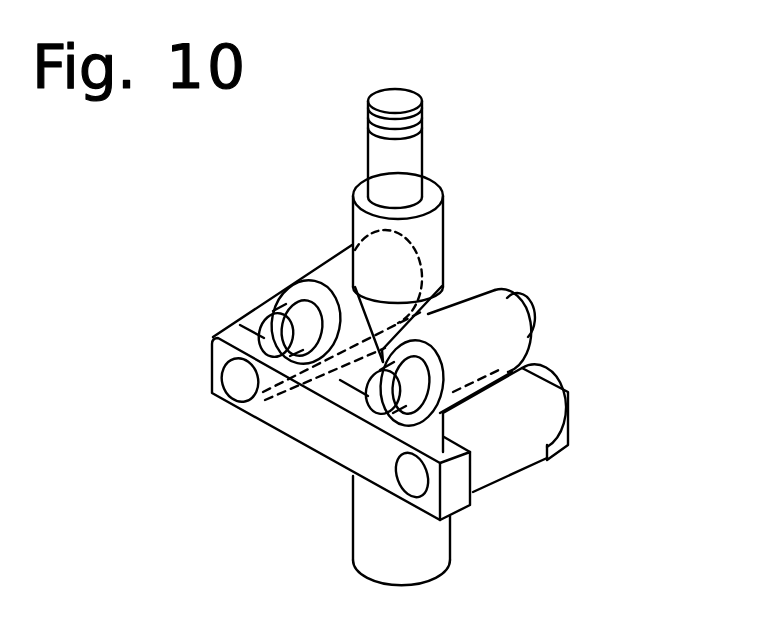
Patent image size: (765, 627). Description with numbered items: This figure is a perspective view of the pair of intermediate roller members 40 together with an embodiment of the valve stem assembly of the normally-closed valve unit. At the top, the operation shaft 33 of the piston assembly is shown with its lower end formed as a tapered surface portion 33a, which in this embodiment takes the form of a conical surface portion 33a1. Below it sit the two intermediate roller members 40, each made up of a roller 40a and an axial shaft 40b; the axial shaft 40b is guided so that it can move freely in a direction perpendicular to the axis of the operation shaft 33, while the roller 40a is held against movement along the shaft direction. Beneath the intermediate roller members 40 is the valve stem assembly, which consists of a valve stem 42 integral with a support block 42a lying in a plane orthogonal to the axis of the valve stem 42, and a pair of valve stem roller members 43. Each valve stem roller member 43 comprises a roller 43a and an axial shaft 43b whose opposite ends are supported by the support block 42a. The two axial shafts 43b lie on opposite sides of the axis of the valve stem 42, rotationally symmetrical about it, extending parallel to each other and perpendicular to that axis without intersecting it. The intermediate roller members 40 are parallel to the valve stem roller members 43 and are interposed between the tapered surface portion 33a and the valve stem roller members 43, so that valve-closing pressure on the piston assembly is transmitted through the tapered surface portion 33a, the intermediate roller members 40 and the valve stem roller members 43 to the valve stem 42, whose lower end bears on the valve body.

The operation shaft 33 is at (444, 211).
The tapered surface portion 33a is at (330, 357).
The conical surface portion 33a1 is at (382, 356).
The intermediate roller member 40 is at (428, 312).
The roller 40a is at (343, 280).
The axial shaft 40b is at (273, 310).
The valve stem 42 is at (365, 545).
The support block 42a is at (322, 440).
The valve stem roller member 43 is at (541, 427).
The roller 43a is at (320, 398).
The axial shaft 43b is at (226, 378).